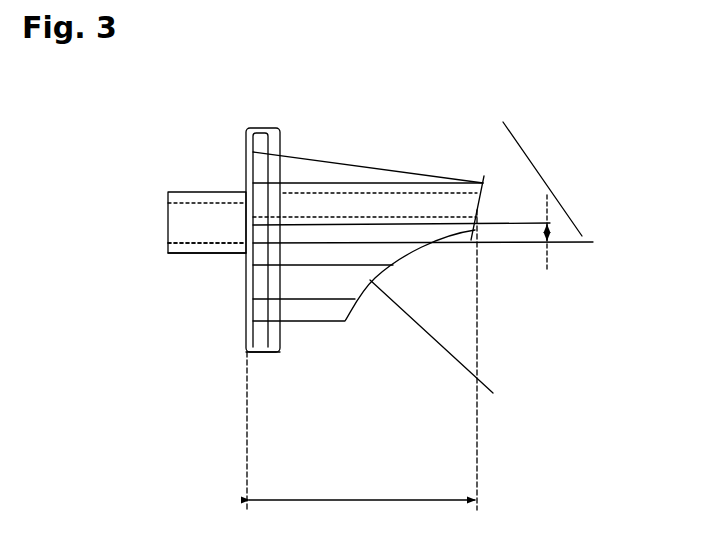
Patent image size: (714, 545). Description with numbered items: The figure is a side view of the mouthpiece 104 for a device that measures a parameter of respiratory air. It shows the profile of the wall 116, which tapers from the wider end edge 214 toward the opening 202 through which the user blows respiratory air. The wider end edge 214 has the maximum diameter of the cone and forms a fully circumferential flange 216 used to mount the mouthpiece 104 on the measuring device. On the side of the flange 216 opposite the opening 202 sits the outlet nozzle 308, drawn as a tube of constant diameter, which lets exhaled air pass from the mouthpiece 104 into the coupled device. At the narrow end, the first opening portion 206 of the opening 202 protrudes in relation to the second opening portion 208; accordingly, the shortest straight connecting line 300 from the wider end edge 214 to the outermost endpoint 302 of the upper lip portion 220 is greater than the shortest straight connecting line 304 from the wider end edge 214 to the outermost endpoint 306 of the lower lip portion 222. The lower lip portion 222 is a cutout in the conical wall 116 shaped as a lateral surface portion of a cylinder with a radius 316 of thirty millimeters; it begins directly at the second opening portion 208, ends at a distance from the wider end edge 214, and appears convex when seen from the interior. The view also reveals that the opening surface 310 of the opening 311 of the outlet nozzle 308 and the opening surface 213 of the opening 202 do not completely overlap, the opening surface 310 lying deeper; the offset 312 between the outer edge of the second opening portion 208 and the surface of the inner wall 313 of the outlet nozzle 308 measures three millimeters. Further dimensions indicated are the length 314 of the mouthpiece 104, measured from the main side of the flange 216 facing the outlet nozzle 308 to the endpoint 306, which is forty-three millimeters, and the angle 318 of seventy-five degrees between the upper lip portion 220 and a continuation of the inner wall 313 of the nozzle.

The mouthpiece 104 is at (155, 130).
The wall 116 is at (319, 322).
The opening 202 is at (487, 198).
The first opening portion 206 is at (470, 168).
The second opening portion 208 is at (462, 247).
The opening surface 213 is at (483, 213).
The wider end edge 214 is at (247, 360).
The flange 216 is at (246, 150).
The upper lip portion 220 is at (383, 160).
The lower lip portion 222 is at (373, 300).
The shortest straight connecting line 300 is at (310, 153).
The outermost endpoint 302 is at (480, 175).
The shortest straight connecting line 304 is at (320, 230).
The outermost endpoint 306 is at (493, 228).
The outlet nozzle 308 is at (190, 264).
The opening surface 310 is at (165, 210).
The opening 311 is at (160, 245).
The offset 312 is at (548, 233).
The inner wall 313 is at (162, 237).
The length 314 is at (364, 500).
The radius 316 is at (417, 327).
The angle 318 is at (540, 140).